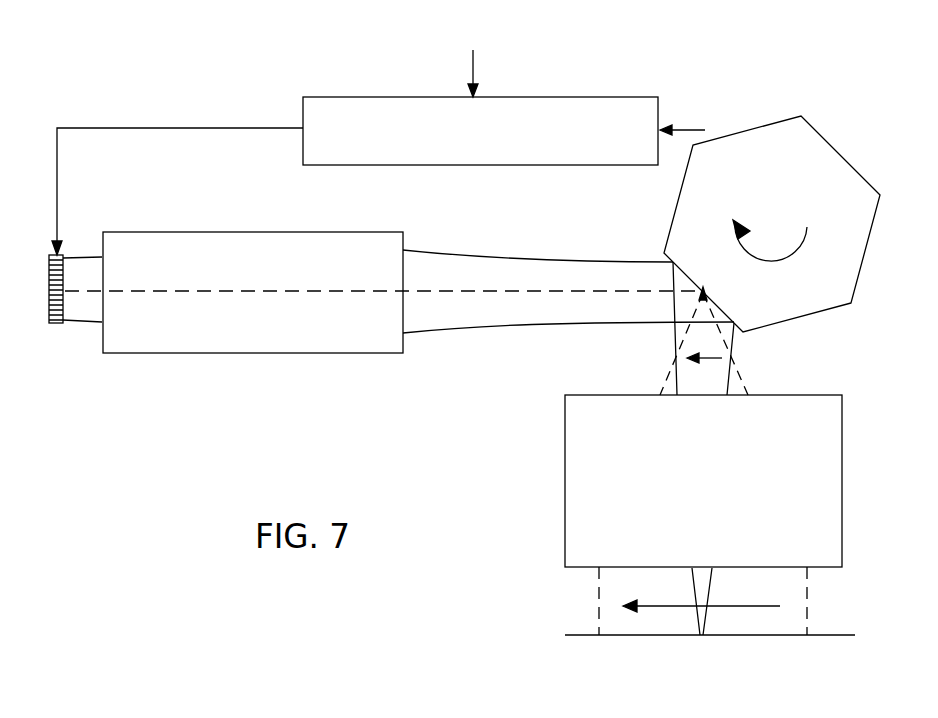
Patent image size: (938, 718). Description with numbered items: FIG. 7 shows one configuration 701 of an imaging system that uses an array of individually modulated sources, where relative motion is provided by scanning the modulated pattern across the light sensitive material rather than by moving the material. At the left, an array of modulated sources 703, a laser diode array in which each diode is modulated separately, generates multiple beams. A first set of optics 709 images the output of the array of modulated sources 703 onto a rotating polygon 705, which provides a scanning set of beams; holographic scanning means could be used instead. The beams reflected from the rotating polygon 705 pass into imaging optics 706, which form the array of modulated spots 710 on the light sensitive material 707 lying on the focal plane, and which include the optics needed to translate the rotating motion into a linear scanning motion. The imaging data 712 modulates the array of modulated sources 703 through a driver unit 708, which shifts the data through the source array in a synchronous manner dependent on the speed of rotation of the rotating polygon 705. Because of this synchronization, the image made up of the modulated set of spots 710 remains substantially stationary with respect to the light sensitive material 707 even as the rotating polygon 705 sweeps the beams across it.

The configuration 701 is at (234, 100).
The array of modulated sources 703 is at (52, 326).
The rotating polygon 705 is at (743, 128).
The imaging optics 706 is at (565, 420).
The light sensitive material 707 is at (580, 635).
The driver unit 708 is at (316, 96).
The first set of optics 709 is at (265, 219).
The array of modulated spots 710 is at (702, 638).
The imaging data 712 is at (478, 72).